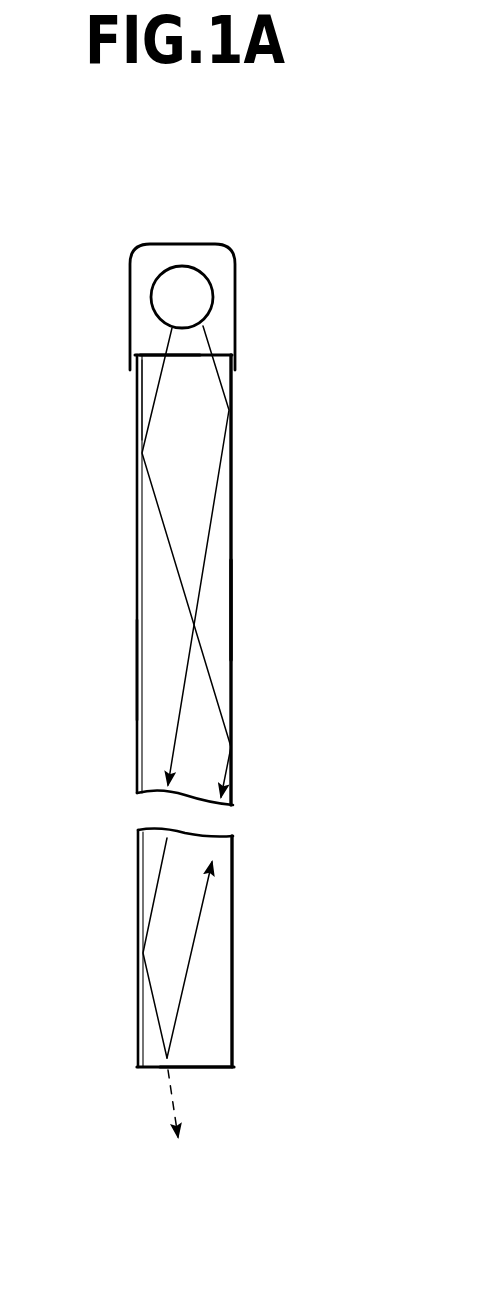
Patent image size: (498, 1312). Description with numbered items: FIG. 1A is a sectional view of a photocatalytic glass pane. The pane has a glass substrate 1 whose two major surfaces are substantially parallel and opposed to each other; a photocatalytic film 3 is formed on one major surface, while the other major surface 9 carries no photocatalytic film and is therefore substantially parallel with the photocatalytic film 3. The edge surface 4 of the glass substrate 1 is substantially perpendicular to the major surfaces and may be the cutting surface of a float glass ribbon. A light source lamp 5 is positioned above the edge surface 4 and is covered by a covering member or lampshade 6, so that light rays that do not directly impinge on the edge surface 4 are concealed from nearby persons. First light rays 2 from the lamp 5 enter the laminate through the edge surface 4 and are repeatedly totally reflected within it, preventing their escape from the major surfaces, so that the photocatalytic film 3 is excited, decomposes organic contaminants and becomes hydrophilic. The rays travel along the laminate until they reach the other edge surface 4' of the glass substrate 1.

The glass substrate 1 is at (201, 470).
The first light rays 2 is at (142, 403).
The photocatalytic film 3 is at (137, 667).
The edge surface 4 is at (128, 328).
The another edge surface 4' is at (227, 1041).
The light source lamp 5 is at (209, 278).
The covering member (lampshade) 6 is at (235, 327).
The other major surface 9 is at (234, 605).